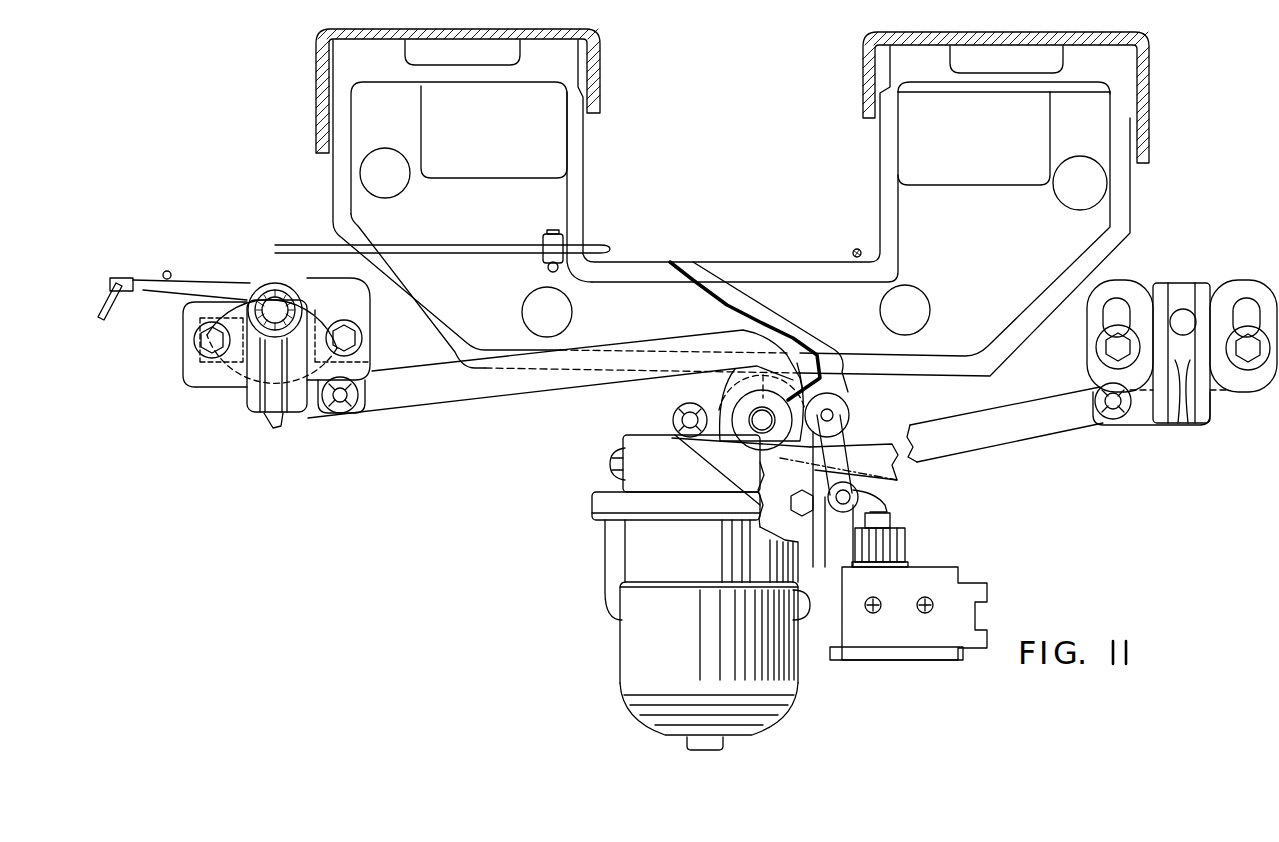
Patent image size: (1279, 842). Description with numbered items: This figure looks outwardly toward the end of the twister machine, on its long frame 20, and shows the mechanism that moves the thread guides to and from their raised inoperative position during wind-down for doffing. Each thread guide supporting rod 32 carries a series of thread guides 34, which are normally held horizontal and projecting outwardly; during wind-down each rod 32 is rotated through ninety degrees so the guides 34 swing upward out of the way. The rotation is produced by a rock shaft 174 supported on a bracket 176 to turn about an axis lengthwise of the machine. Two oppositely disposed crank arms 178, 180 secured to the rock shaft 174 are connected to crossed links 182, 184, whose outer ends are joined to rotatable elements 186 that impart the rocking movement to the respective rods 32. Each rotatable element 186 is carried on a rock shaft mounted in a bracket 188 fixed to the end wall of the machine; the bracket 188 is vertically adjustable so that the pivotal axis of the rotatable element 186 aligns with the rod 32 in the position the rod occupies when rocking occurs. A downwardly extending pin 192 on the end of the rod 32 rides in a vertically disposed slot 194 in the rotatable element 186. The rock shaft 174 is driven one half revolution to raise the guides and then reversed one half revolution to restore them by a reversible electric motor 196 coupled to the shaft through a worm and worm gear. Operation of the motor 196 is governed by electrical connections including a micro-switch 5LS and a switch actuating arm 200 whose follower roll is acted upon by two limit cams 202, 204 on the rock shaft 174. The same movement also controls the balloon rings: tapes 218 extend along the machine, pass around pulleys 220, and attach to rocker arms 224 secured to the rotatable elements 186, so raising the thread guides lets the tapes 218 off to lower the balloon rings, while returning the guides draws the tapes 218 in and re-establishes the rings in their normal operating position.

The frame 20 is at (306, 94).
The thread guide supporting rod 32 is at (274, 284).
The thread guide 34 is at (122, 278).
The rock shaft 174 is at (760, 427).
The bracket 176 is at (810, 575).
The crank arm 178 is at (849, 381).
The crank arm 180 is at (735, 392).
The crossed link 182 is at (431, 400).
The crossed link 184 is at (1020, 435).
The rotatable element 186 is at (310, 400).
The bracket 188 is at (1220, 285).
The pin 192 is at (277, 387).
The slot 194 is at (278, 400).
The reversible electric motor 196 is at (640, 636).
The switch actuating arm 200 is at (830, 457).
The limit cam 202 is at (684, 411).
The limit cam 204 is at (772, 378).
The tape 218 is at (412, 245).
The pulley 220 is at (603, 240).
The rocker arm 224 is at (250, 284).
The micro-switch 5LS is at (935, 580).